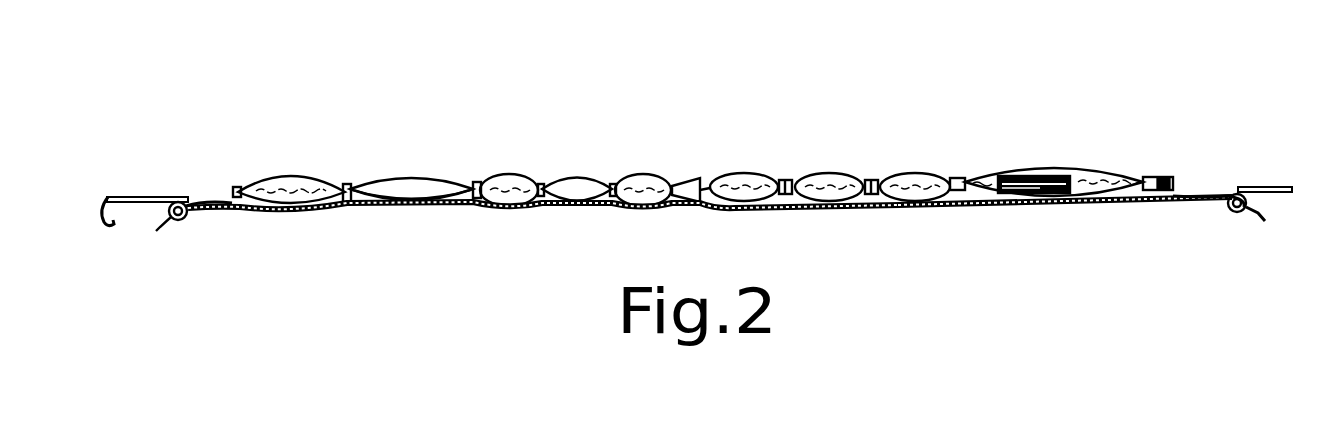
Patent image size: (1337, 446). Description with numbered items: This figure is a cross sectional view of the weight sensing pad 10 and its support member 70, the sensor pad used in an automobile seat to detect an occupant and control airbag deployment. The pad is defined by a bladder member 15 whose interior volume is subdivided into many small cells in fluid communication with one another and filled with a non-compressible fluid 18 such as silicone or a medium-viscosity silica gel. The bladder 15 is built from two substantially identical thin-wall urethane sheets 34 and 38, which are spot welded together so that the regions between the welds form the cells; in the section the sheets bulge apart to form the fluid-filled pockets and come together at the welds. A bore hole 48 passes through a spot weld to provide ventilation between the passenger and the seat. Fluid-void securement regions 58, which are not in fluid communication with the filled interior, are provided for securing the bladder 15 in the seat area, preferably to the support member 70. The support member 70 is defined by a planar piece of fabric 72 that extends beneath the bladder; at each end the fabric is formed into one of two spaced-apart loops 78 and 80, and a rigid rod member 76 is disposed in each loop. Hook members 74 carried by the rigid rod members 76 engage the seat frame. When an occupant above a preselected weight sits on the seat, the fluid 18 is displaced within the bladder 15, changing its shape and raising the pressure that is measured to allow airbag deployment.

The weight sensing pad 10 is at (840, 108).
The bladder member 15 is at (567, 177).
The non-compressible fluid 18 is at (928, 174).
The urethane sheet 34 is at (376, 177).
The urethane sheet 38 is at (401, 205).
The bore hole 48 is at (1147, 177).
The securement region 58 is at (434, 178).
The support member 70 is at (958, 209).
The planar piece of fabric 72 is at (822, 209).
The hook member 74 is at (133, 197).
The rigid rod member 76 is at (179, 202).
The loop 78 is at (1224, 192).
The loop 80 is at (200, 203).